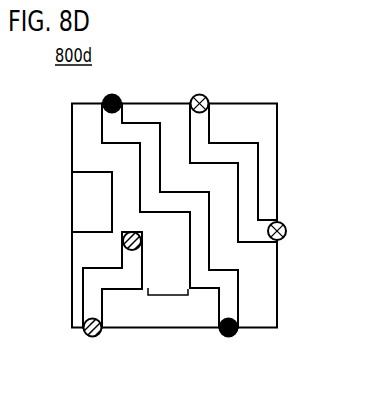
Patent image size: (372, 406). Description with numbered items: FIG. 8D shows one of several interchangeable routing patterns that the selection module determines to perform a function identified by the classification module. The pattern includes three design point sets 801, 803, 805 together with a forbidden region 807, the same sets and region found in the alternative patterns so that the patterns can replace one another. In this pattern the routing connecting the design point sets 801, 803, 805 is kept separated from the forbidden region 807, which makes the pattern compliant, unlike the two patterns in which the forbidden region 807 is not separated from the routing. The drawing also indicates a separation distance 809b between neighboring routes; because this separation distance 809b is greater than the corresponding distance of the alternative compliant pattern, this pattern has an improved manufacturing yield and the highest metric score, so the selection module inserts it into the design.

The design point set 801 is at (121, 99).
The design point set 803 is at (123, 241).
The design point set 805 is at (208, 99).
The forbidden region 807 is at (72, 199).
The separation distance 809b is at (168, 295).